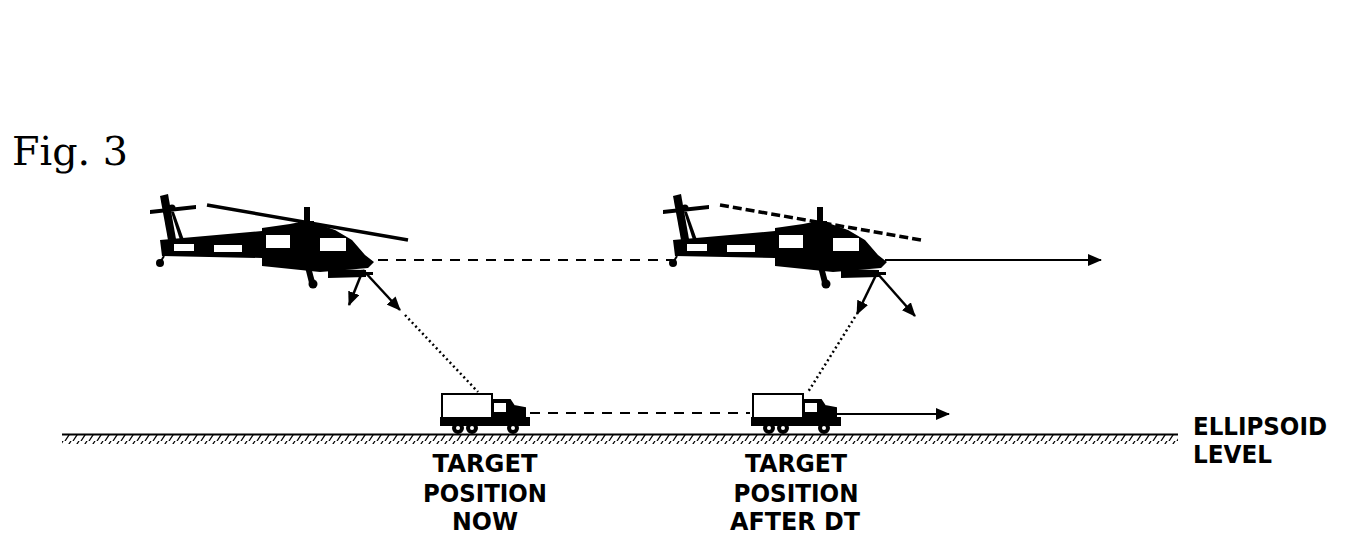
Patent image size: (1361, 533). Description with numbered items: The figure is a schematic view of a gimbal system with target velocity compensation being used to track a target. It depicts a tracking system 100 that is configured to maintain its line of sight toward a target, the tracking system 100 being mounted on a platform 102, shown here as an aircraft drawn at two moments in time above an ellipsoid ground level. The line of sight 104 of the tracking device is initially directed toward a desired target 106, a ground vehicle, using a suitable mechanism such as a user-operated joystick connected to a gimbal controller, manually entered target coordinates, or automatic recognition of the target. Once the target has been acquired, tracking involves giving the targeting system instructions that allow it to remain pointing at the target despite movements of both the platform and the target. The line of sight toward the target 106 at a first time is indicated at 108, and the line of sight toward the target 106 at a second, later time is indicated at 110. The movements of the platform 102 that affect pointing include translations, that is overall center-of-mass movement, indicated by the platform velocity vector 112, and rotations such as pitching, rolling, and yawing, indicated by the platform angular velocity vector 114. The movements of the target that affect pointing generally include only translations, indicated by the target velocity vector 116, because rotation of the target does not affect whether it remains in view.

The tracking system 100 is at (200, 293).
The platform 102 is at (375, 191).
The line of sight 104 is at (362, 293).
The target 106 is at (449, 392).
The line of sight at a first time 108 is at (441, 352).
The line of sight at a second time 110 is at (832, 352).
The platform velocity vector 112 is at (988, 259).
The platform angular velocity vector 114 is at (371, 296).
The target velocity vector 116 is at (913, 412).